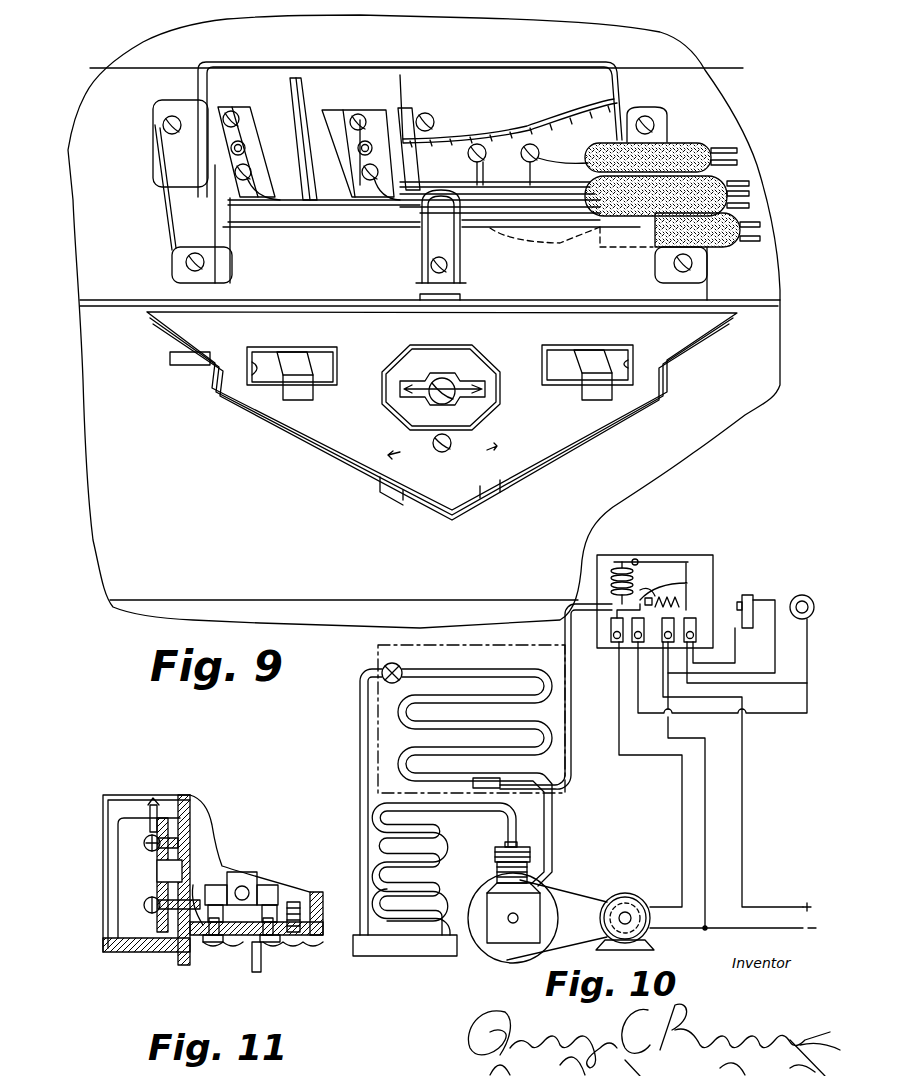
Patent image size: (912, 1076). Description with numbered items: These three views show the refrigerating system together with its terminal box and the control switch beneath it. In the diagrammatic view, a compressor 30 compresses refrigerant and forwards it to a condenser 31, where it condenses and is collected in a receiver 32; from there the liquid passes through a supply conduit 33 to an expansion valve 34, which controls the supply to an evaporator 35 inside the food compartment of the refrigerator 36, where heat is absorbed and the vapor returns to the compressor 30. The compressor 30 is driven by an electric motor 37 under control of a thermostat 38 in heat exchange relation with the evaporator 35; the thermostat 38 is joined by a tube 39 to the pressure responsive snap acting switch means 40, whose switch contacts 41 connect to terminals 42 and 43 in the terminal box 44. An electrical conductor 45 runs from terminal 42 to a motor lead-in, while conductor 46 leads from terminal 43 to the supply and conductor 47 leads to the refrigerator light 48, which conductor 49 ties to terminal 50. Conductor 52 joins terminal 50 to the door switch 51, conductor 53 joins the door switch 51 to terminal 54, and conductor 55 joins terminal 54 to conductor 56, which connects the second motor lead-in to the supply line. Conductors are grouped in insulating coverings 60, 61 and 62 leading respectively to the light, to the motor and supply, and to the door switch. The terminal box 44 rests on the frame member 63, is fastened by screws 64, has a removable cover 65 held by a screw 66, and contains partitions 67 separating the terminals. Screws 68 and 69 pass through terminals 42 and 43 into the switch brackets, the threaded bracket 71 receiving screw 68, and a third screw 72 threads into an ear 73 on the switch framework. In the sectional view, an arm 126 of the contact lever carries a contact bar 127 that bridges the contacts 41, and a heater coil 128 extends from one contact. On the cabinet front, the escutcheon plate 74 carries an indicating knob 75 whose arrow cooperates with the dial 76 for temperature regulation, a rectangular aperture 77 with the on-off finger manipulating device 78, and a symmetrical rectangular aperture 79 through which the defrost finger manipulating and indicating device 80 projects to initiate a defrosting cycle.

In FIG. 10, the compressor 30 is at (530, 905).
In FIG. 10, the condenser 31 is at (418, 852).
In FIG. 10, the receiver 32 is at (420, 956).
In FIG. 10, the supply conduit 33 is at (358, 800).
In FIG. 10, the expansion valve 34 is at (380, 673).
In FIG. 10, the evaporator 35 is at (463, 672).
In FIG. 10, the refrigerator 36 is at (545, 652).
In FIG. 10, the electric motor 37 is at (630, 897).
In FIG. 10, the thermostat 38 is at (490, 778).
In FIG. 10, the tube 39 is at (576, 752).
In FIG. 11, the tube 39 is at (265, 968).
In FIG. 10, the pressure responsive snap acting switch means 40 is at (650, 585).
In FIG. 10, the switch contacts 41 is at (690, 590).
In FIG. 11, the switch contacts 41 is at (213, 942).
In FIG. 9, the terminal 42 is at (238, 118).
In FIG. 10, the terminal 42 is at (611, 630).
In FIG. 11, the terminal 42 is at (152, 890).
In FIG. 9, the terminal 43 is at (360, 120).
In FIG. 10, the terminal 43 is at (635, 638).
In FIG. 9, the terminal box 44 is at (280, 255).
In FIG. 10, the terminal box 44 is at (614, 562).
In FIG. 11, the terminal box 44 is at (148, 945).
In FIG. 9, the electrical conductor 45 is at (749, 205).
In FIG. 10, the electrical conductor 45 is at (682, 787).
In FIG. 9, the electrical conductor 46 is at (749, 193).
In FIG. 10, the electrical conductor 46 is at (743, 790).
In FIG. 9, the electrical conductor 47 is at (737, 162).
In FIG. 10, the electrical conductor 47 is at (760, 716).
In FIG. 10, the refrigerator light 48 is at (814, 603).
In FIG. 9, the electrical conductor 49 is at (737, 150).
In FIG. 9, the terminal 50 is at (533, 146).
In FIG. 10, the terminal 50 is at (692, 628).
In FIG. 10, the door switch 51 is at (749, 595).
In FIG. 9, the electrical conductor 52 is at (760, 225).
In FIG. 10, the electrical conductor 52 is at (732, 650).
In FIG. 9, the electrical conductor 53 is at (760, 239).
In FIG. 10, the electrical conductor 53 is at (775, 600).
In FIG. 9, the terminal 54 is at (478, 147).
In FIG. 10, the terminal 54 is at (668, 628).
In FIG. 9, the electrical conductor 55 is at (749, 183).
In FIG. 10, the electrical conductor 55 is at (706, 832).
In FIG. 10, the electrical conductor 56 is at (720, 930).
In FIG. 9, the insulating covering 60 is at (693, 143).
In FIG. 9, the insulating covering 61 is at (700, 195).
In FIG. 9, the insulating covering 62 is at (708, 232).
In FIG. 9, the frame member 63 is at (693, 90).
In FIG. 9, the screws 64 is at (648, 120).
In FIG. 9, the removable cover 65 is at (470, 75).
In FIG. 9, the screw 66 is at (428, 116).
In FIG. 9, the partitions 67 is at (300, 80).
In FIG. 11, the partitions 67 is at (130, 856).
In FIG. 9, the screw 68 is at (232, 115).
In FIG. 11, the screw 68 is at (152, 910).
In FIG. 9, the screw 69 is at (362, 122).
In FIG. 11, the threaded bracket 71 is at (185, 920).
In FIG. 9, the third screw 72 is at (450, 268).
In FIG. 9, the ear 73 is at (455, 297).
In FIG. 9, the escutcheon plate 74 is at (230, 332).
In FIG. 9, the indicating knob 75 is at (480, 395).
In FIG. 9, the dial 76 is at (400, 415).
In FIG. 9, the rectangular aperture 77 is at (255, 378).
In FIG. 9, the finger manipulating device 78 is at (300, 385).
In FIG. 9, the rectangular aperture 79 is at (630, 362).
In FIG. 9, the finger manipulating and indicating device 80 is at (600, 385).
In FIG. 11, the arm 126 is at (232, 878).
In FIG. 11, the contact bar 127 is at (262, 892).
In FIG. 11, the heater coil 128 is at (256, 942).